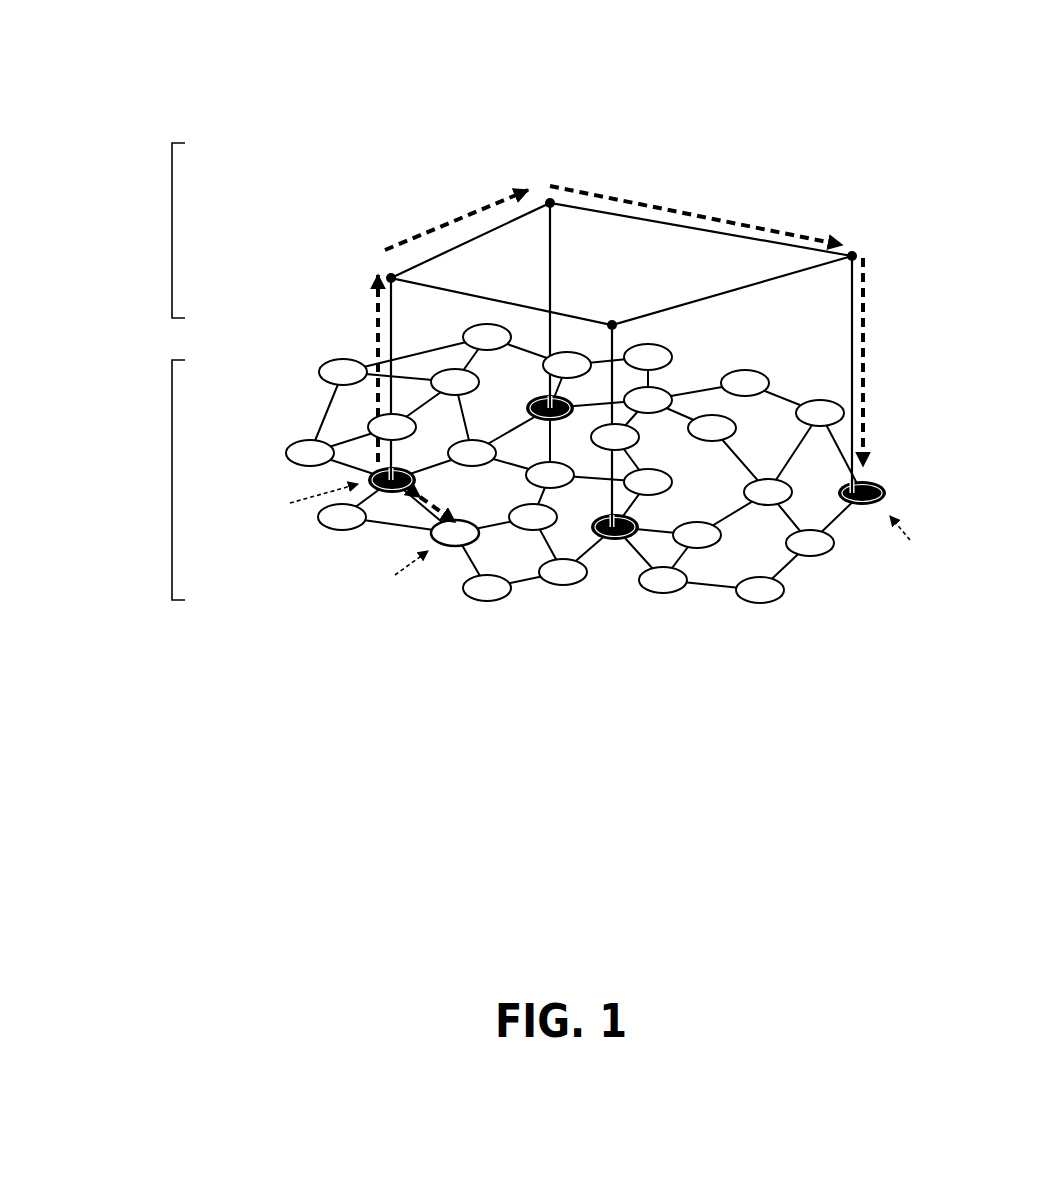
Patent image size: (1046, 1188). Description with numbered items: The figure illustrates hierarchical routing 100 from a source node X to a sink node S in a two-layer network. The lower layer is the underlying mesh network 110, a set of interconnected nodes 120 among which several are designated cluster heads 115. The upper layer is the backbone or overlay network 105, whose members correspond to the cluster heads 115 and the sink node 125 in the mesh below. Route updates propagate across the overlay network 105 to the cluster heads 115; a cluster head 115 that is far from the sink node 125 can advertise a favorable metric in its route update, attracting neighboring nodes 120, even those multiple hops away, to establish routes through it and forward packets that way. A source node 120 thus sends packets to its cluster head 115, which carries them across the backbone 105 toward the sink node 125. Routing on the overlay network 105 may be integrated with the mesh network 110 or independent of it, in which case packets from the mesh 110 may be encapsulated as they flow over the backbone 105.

The hierarchical routing 100 is at (373, 103).
The overlay network 105 is at (93, 163).
The mesh network 110 is at (73, 540).
The cluster head 115 is at (237, 573).
The node 120 is at (418, 613).
The sink node 125 is at (925, 597).